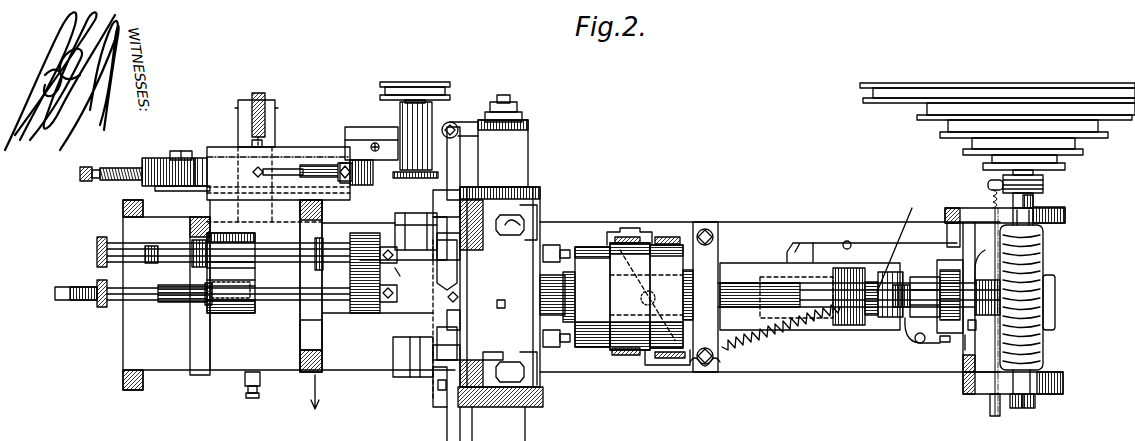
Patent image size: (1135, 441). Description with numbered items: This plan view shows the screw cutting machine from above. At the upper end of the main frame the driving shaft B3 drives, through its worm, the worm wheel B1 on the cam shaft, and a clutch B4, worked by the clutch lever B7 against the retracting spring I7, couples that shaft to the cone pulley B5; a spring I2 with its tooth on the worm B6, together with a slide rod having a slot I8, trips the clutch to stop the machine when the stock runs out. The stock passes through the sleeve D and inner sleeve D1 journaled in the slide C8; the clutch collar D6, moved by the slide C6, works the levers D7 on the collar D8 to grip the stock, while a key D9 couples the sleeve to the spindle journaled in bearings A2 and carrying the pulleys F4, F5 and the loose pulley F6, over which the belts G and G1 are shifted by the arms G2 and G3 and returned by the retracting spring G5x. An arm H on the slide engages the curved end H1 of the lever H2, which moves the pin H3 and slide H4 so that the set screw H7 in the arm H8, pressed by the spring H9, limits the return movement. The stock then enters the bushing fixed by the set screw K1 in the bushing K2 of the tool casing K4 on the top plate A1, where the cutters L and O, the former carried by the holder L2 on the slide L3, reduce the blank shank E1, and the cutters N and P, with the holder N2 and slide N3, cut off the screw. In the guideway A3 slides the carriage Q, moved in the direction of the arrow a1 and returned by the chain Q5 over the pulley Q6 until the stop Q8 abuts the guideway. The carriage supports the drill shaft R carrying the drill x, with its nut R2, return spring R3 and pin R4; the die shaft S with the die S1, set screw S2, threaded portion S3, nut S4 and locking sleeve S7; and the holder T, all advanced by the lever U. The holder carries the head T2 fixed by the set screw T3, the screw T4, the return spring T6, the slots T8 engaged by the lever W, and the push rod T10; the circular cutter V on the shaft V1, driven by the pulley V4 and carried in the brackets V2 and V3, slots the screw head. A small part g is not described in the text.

The screw T4 is at (84, 172).
The holder T is at (158, 162).
The lever W is at (181, 151).
The registering slots T8 is at (200, 157).
The pulley Q6 is at (260, 98).
The chain Q5 is at (258, 146).
The push rod T10 is at (302, 172).
The set screw T3 is at (348, 134).
The bracket V3 is at (363, 139).
The shaft V1 is at (410, 116).
The pulley V4 is at (418, 90).
The bracket V2 is at (440, 127).
The circular cutter V is at (405, 178).
The cutting tool P is at (433, 201).
The head T2 is at (379, 190).
The holder L2 is at (462, 190).
The slide L3 is at (507, 245).
The nut S4 is at (113, 240).
The reduced threaded portion S3 is at (152, 250).
The sleeve S7 is at (202, 247).
The die shaft S is at (283, 250).
The die S1 is at (336, 250).
The set screw S2 is at (388, 247).
The lever U is at (63, 300).
The nut R2 is at (120, 301).
The drill shaft R is at (188, 303).
The pin R4 is at (203, 302).
The spring R3 is at (232, 313).
The carriage Q is at (278, 249).
The guideway A3 is at (320, 350).
The blank shank E1 is at (385, 305).
The stop Q8 is at (246, 385).
The arrow a1 is at (321, 392).
The pin g is at (395, 276).
The cutting tool L is at (443, 270).
The drill x is at (433, 300).
The set screw K1 is at (459, 297).
The bushing K2 is at (464, 319).
The tool casing K4 is at (507, 312).
The cutting tool N is at (436, 327).
The holder N2 is at (460, 344).
The slide N3 is at (492, 362).
The cutting tool O is at (436, 390).
The top plate A1 is at (576, 221).
The bearings A2 is at (718, 270).
The pulley F5 is at (592, 297).
The loose pulley F6 is at (646, 296).
The pulley F4 is at (666, 296).
The shifting arm G3 is at (628, 240).
The belt G is at (664, 240).
The belt G1 is at (635, 352).
The shifting arm G2 is at (670, 364).
The retracting spring G5x is at (740, 347).
The slide C8 is at (746, 265).
The key D9 is at (780, 336).
The sleeve D is at (822, 320).
The collar D8 is at (880, 318).
The clutch collar D6 is at (922, 280).
The levers D7 is at (902, 232).
The arm H8 is at (940, 345).
The spring H9 is at (906, 340).
The set screw H7 is at (962, 366).
The sleeve D1 is at (990, 299).
The worm wheel B1 is at (1043, 255).
The slot I8 is at (1030, 265).
The driving shaft B3 is at (1050, 211).
The clutch B4 is at (1036, 198).
The clutch lever B7 is at (1005, 183).
The retracting spring I7 is at (992, 198).
The cone pulley B5 is at (963, 153).
The slide H4 is at (948, 214).
The pin H3 is at (947, 242).
The curved end H1 is at (793, 248).
The lever H2 is at (876, 242).
The transversely-extending arm H is at (815, 258).
The slide C6 is at (978, 266).
The worm B6 is at (972, 330).
The spring I2 is at (970, 341).
The spring T6 is at (995, 411).